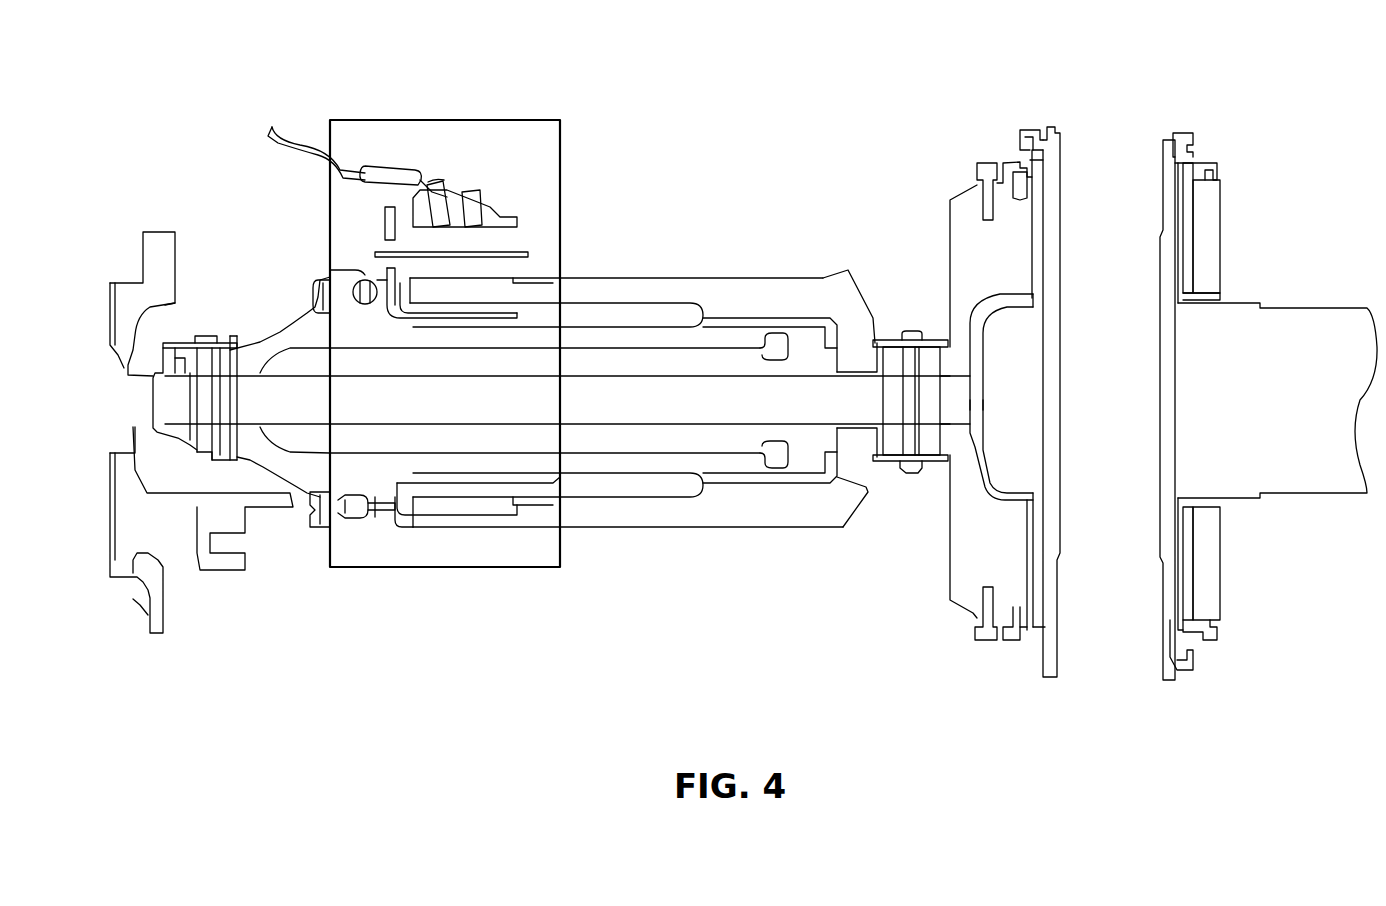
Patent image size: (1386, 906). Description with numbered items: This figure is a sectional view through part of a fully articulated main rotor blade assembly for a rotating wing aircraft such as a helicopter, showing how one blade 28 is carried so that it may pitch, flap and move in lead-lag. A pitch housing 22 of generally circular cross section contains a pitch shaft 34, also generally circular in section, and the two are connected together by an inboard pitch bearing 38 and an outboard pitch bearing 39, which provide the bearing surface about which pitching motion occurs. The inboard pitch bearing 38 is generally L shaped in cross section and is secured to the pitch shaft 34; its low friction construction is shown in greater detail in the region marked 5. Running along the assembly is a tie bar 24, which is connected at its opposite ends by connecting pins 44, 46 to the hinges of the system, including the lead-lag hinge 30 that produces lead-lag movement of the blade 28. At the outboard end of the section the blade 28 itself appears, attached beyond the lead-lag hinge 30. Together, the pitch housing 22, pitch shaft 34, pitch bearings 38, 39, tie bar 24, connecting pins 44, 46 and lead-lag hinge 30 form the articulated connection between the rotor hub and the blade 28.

The detail region of FIG. 5 is at (445, 120).
The pitch housing 22 is at (540, 337).
The tie bar 24 is at (603, 393).
The blade 28 is at (1323, 340).
The lead-lag hinge 30 is at (1140, 180).
The pitch shaft 34 is at (340, 485).
The inboard pitch bearing 38 is at (463, 285).
The outboard pitch bearing 39 is at (801, 300).
The connecting pin 44 is at (197, 392).
The connecting pin 46 is at (917, 327).